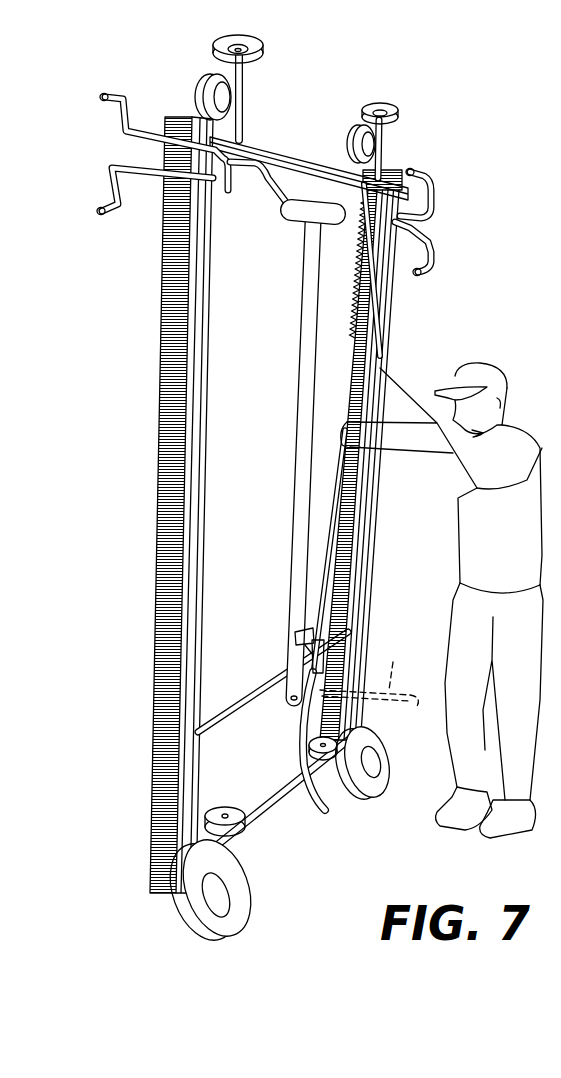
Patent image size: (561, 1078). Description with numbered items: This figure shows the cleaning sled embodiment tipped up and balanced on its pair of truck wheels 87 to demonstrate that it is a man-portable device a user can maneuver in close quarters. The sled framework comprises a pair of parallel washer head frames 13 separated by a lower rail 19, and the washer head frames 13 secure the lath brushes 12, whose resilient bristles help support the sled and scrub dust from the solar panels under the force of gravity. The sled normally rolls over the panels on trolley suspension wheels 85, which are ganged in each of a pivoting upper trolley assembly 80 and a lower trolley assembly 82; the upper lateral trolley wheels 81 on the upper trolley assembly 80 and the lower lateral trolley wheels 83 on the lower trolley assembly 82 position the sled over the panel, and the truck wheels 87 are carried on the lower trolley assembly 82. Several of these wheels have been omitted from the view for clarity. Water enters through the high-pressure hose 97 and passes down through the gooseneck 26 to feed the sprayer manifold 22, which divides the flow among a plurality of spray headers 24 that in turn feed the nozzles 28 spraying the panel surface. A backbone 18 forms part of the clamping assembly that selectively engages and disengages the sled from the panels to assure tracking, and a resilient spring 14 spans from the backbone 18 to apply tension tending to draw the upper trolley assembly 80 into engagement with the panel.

The lath brush 12 is at (168, 425).
The washer head frame 13 is at (205, 299).
The resilient spring 14 is at (375, 293).
The backbone 18 is at (340, 502).
The lower rail 19 is at (258, 690).
The sprayer manifold 22 is at (305, 335).
The spray header 24 is at (445, 195).
The gooseneck 26 is at (325, 632).
The nozzle 28 is at (102, 95).
The upper trolley assembly 80 is at (284, 138).
The upper lateral trolley wheel 81 is at (268, 46).
The lower trolley assembly 82 is at (282, 824).
The lower lateral trolley wheel 83 is at (295, 767).
The trolley suspension wheel 85 is at (200, 87).
The truck wheel 87 is at (378, 792).
The high-pressure hose 97 is at (393, 664).